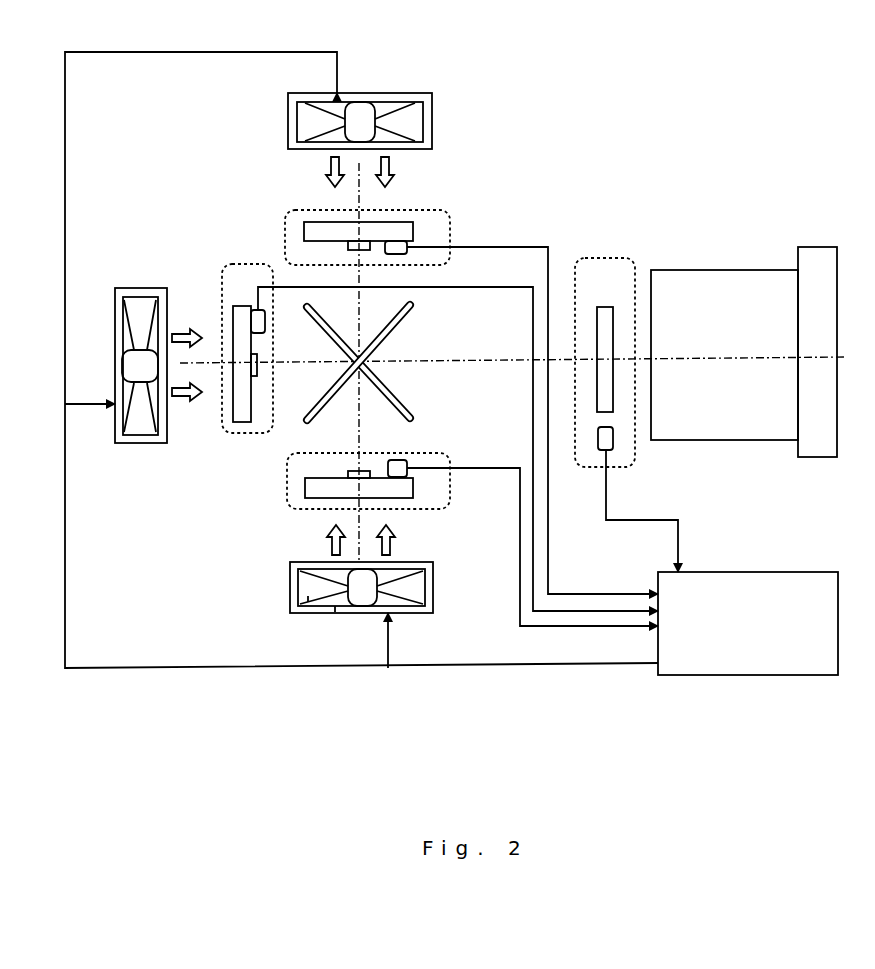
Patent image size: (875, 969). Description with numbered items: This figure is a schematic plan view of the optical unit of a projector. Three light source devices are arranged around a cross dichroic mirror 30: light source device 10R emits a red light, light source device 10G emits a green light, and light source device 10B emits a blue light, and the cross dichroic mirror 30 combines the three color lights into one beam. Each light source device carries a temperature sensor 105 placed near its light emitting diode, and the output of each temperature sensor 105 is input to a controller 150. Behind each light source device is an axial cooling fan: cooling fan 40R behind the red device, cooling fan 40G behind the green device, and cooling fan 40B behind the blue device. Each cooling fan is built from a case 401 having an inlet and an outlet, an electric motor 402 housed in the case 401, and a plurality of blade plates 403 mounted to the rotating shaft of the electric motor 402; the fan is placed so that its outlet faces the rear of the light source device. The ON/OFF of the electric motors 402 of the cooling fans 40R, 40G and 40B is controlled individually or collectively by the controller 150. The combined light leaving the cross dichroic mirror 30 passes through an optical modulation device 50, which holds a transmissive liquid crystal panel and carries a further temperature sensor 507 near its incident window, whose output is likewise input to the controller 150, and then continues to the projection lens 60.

The cooling fan 40R is at (432, 118).
The cooling fan 40G is at (122, 288).
The cooling fan 40B is at (292, 593).
The light source device 10R is at (283, 238).
The light source device 10G is at (250, 433).
The light source device 10B is at (287, 498).
The temperature sensor 105 is at (398, 254).
The cross dichroic mirror 30 is at (397, 326).
The optical modulation device 50 is at (607, 258).
The temperature sensor 507 is at (613, 442).
The projection lens 60 is at (770, 287).
The controller 150 is at (778, 572).
The case 401 is at (335, 612).
The electric motor 402 is at (360, 602).
The blade plates 403 is at (308, 602).